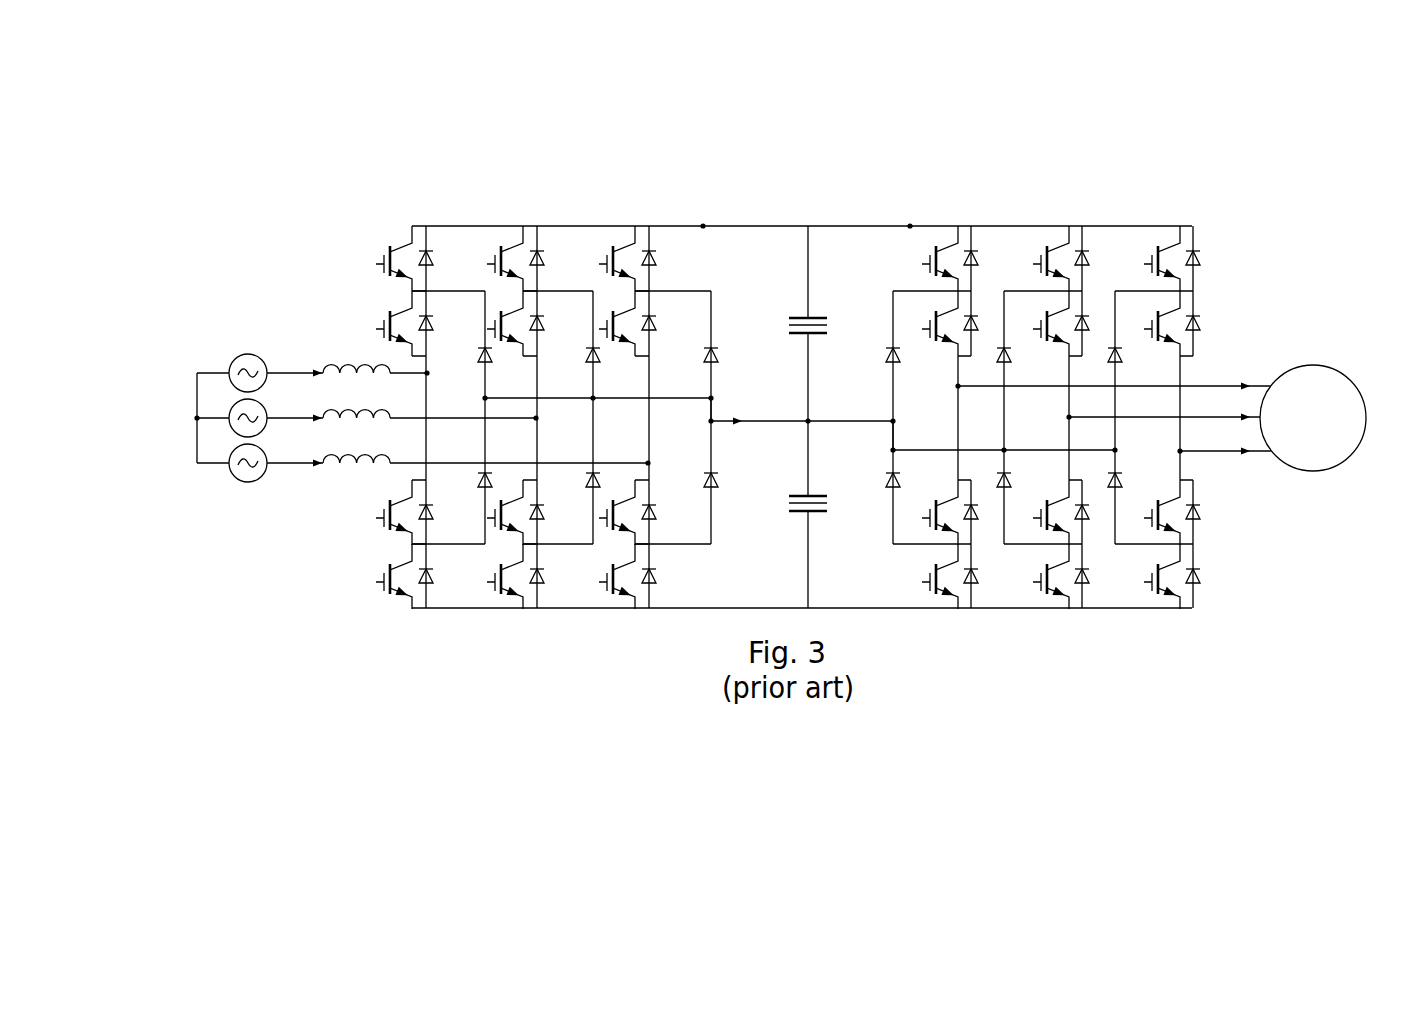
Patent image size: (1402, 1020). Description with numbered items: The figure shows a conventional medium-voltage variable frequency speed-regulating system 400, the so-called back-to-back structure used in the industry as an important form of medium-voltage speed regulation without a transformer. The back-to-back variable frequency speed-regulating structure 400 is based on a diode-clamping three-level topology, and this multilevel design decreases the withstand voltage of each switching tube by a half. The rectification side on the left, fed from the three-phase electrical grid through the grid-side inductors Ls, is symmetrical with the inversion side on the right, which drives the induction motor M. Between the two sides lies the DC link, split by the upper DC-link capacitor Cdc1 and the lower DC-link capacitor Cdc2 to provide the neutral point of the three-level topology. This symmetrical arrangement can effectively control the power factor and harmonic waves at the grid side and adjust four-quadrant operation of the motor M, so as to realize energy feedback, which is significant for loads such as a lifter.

The medium-voltage variable frequency speed-regulating system 400 is at (633, 124).
The upper DC-link capacitor Cdc1 is at (800, 323).
The lower DC-link capacitor Cdc2 is at (800, 514).
The grid-side inductor Ls is at (356, 399).
The induction motor M is at (1313, 418).